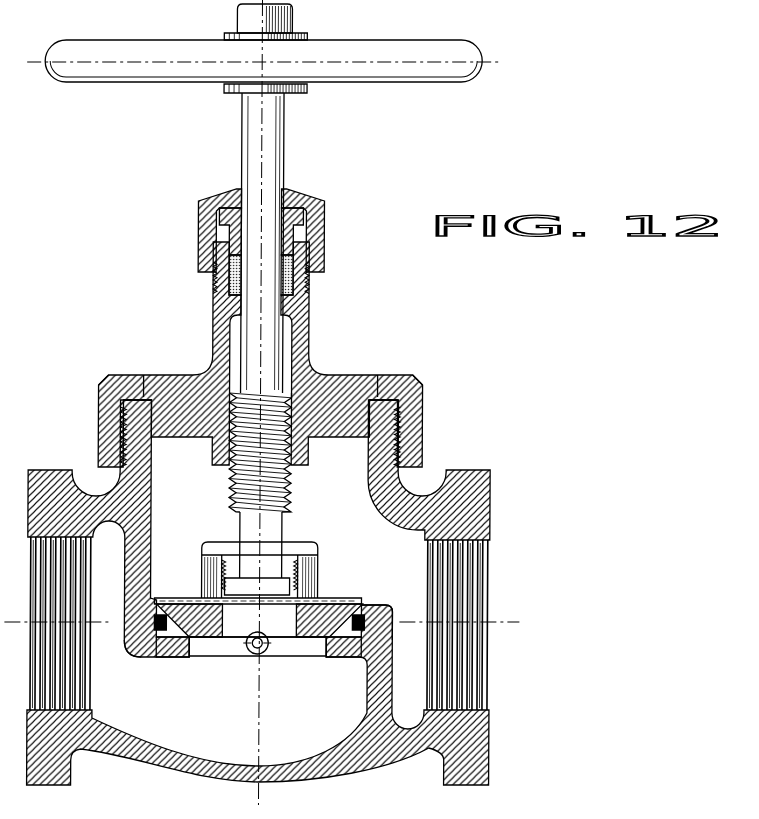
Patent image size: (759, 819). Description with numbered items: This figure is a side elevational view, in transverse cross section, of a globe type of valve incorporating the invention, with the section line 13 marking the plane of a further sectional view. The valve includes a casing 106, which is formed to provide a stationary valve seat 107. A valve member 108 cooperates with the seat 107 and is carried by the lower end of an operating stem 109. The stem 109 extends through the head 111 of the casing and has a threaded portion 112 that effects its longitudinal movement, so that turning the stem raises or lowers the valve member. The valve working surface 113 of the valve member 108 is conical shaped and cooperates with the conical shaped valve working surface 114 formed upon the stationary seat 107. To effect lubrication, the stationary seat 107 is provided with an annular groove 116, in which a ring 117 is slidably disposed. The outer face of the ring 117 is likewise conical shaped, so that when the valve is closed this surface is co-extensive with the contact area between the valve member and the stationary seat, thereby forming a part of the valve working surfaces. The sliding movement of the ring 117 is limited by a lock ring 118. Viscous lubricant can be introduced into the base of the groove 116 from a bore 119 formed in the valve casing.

The casing 106 is at (492, 505).
The stationary valve seat 107 is at (152, 642).
The valve member 108 is at (303, 577).
The operating stem 109 is at (284, 516).
The head 111 is at (337, 382).
The threaded portion 112 is at (227, 380).
The valve working surface 113 is at (283, 650).
The valve working surface 114 is at (208, 652).
The annular groove 116 is at (340, 647).
The ring 117 is at (172, 633).
The lock ring 118 is at (364, 610).
The bore 119 is at (250, 648).
The section line 13- 13 is at (256, 522).